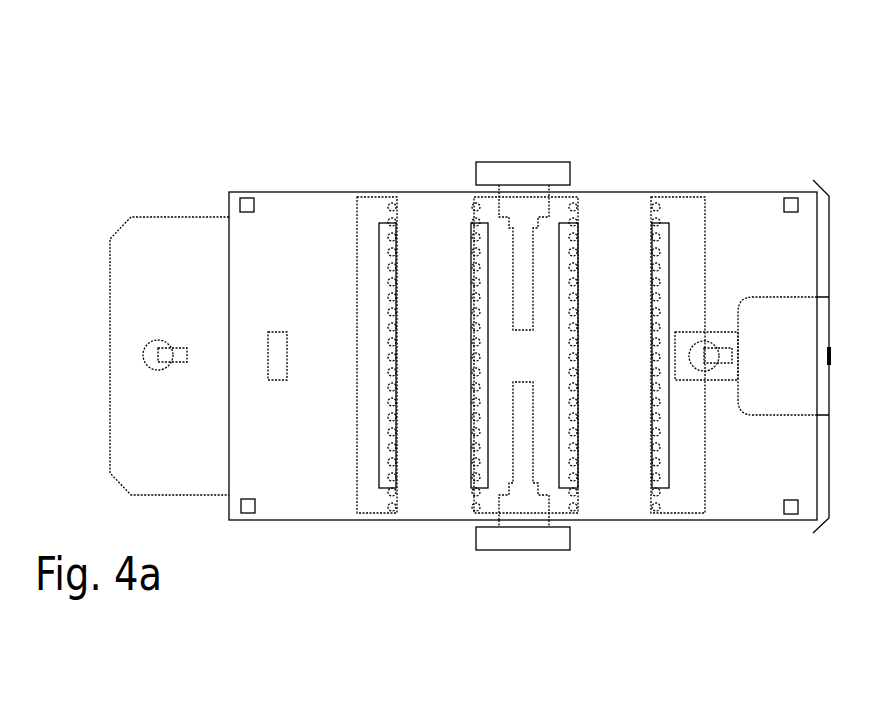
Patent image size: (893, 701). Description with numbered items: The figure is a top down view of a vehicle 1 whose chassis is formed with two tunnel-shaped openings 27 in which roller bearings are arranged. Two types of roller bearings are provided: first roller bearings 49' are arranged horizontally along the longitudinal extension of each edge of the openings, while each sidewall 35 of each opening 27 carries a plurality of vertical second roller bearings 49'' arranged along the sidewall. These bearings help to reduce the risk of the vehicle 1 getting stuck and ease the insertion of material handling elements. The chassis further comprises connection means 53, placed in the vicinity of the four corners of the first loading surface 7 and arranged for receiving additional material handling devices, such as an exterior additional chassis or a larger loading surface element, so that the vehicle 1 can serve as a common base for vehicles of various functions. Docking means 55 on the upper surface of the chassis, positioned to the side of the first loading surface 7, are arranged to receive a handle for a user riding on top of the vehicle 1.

The vehicle 1 is at (306, 79).
The first loading surface 7 is at (698, 161).
The tunnel-shaped opening 27 is at (441, 500).
The sidewall 35 is at (463, 428).
The first roller bearing 49' is at (537, 355).
The second roller bearing 49'' is at (524, 357).
The connection means 53 is at (246, 198).
The docking means 55 is at (282, 350).